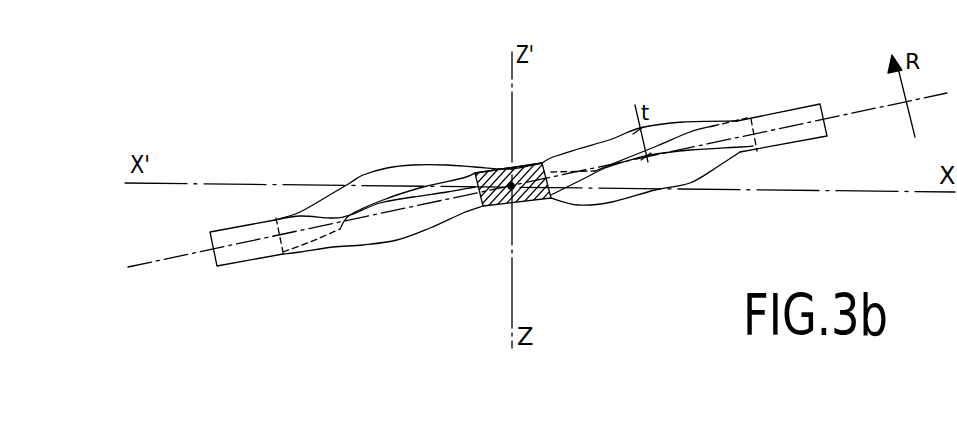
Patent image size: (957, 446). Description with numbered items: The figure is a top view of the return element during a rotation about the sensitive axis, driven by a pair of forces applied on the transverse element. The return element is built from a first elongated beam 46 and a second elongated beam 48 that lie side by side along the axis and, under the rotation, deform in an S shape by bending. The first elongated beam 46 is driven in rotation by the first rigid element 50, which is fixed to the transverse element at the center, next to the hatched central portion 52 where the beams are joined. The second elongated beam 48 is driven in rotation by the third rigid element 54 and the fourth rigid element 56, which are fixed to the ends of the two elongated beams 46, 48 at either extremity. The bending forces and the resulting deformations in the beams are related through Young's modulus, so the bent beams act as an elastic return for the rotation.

The first elongated beam 46 is at (407, 222).
The second elongated beam 48 is at (397, 178).
The first rigid element 50 is at (530, 200).
The central hatched portion 52 is at (483, 168).
The third rigid element 54 is at (250, 250).
The fourth rigid element 56 is at (805, 116).